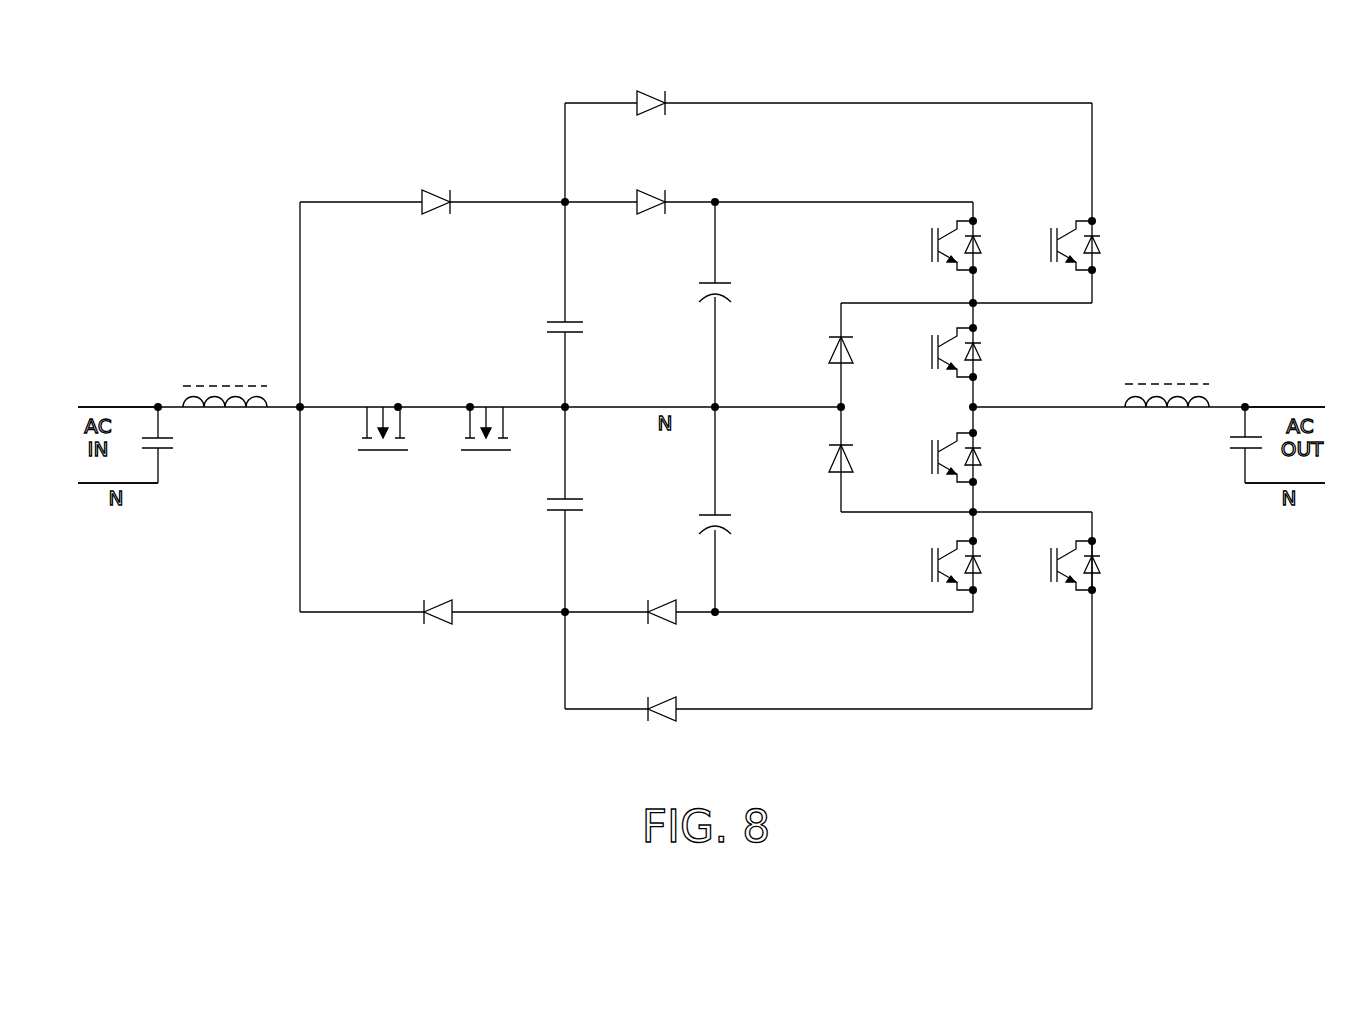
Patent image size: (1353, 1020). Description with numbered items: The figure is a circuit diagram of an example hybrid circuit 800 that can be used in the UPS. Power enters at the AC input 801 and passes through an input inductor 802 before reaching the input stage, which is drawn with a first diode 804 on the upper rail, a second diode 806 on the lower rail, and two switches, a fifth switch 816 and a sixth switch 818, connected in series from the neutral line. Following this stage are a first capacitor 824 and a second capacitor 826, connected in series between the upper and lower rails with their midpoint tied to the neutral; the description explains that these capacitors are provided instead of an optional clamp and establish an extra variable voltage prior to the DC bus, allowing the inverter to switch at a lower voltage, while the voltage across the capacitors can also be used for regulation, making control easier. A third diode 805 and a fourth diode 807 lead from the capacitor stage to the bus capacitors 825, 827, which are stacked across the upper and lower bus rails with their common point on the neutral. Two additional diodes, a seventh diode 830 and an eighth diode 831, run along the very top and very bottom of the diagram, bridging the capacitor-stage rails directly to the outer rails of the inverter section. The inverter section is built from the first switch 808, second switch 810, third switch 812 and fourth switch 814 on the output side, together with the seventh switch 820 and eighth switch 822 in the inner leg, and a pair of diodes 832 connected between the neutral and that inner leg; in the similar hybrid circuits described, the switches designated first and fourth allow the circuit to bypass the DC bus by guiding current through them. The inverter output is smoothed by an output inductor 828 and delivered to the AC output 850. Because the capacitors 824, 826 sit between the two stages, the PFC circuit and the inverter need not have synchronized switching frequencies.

The hybrid circuit 800 is at (1188, 185).
The AC input 801 is at (93, 403).
The input inductor 802 is at (200, 385).
The diode D1 804 is at (438, 247).
The diode D3 805 is at (652, 186).
The diode D2 806 is at (440, 626).
The diode D4 807 is at (660, 627).
The switch S1 808 is at (1107, 242).
The switch S2 810 is at (983, 350).
The switch S3 812 is at (983, 455).
The switch S4 814 is at (1106, 566).
The switch S5 816 is at (387, 482).
The switch S6 818 is at (490, 482).
The switch S7 820 is at (978, 232).
The switch S8 822 is at (980, 582).
The capacitor C1 824 is at (577, 312).
The capacitor 825 is at (722, 277).
The capacitor C2 826 is at (577, 490).
The capacitor 827 is at (725, 540).
The output inductor 828 is at (1165, 385).
The diode D7 830 is at (655, 90).
The diode D8 831 is at (678, 731).
The diodes D5 and D6 832 is at (822, 346).
The AC output 850 is at (1280, 400).